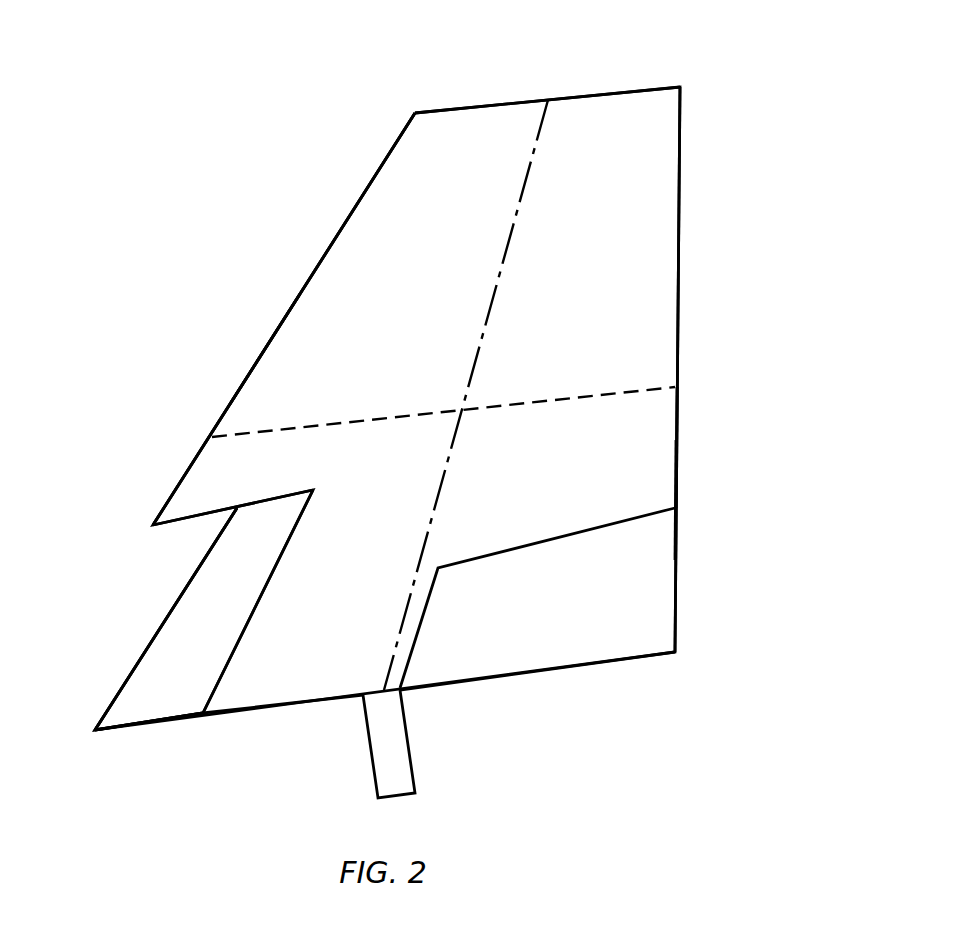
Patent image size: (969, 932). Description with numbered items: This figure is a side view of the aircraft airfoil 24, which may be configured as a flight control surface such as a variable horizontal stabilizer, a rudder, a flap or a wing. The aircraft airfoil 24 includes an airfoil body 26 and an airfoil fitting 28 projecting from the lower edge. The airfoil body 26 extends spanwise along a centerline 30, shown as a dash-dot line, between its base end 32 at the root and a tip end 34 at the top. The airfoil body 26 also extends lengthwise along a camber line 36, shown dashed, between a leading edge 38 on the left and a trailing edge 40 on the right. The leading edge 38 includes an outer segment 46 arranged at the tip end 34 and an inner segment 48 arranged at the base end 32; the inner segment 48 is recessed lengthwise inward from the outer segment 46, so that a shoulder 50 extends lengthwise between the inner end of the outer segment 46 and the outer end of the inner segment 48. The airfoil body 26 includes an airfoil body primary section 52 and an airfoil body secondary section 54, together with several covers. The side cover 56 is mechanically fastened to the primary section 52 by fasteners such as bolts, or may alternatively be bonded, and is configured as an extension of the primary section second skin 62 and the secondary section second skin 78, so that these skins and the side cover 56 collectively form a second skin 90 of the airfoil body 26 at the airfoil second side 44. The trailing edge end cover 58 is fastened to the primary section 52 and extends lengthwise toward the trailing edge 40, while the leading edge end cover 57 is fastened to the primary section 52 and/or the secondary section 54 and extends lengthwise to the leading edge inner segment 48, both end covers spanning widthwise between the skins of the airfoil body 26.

The aircraft airfoil 24 is at (713, 89).
The airfoil body 26 is at (682, 212).
The airfoil fitting 28 is at (366, 769).
The centerline 30 is at (447, 472).
The base end 32 is at (220, 715).
The tip end 34 is at (495, 102).
The camber line 36 is at (390, 417).
The leading edge 38 is at (176, 458).
The trailing edge 40 is at (675, 410).
The second exterior side 44 is at (292, 347).
The second skin 90 is at (248, 349).
The leading edge outer segment 46 is at (305, 287).
The leading edge inner segment 48 is at (158, 627).
The shoulder 50 is at (187, 525).
The airfoil body primary section 52 is at (359, 247).
The airfoil body secondary section 54 is at (129, 695).
The side cover 56 is at (655, 603).
The leading edge end cover 57 is at (157, 734).
The trailing edge end cover 58 is at (513, 687).
The primary section second skin 62 is at (658, 470).
The secondary section second skin 78 is at (140, 715).